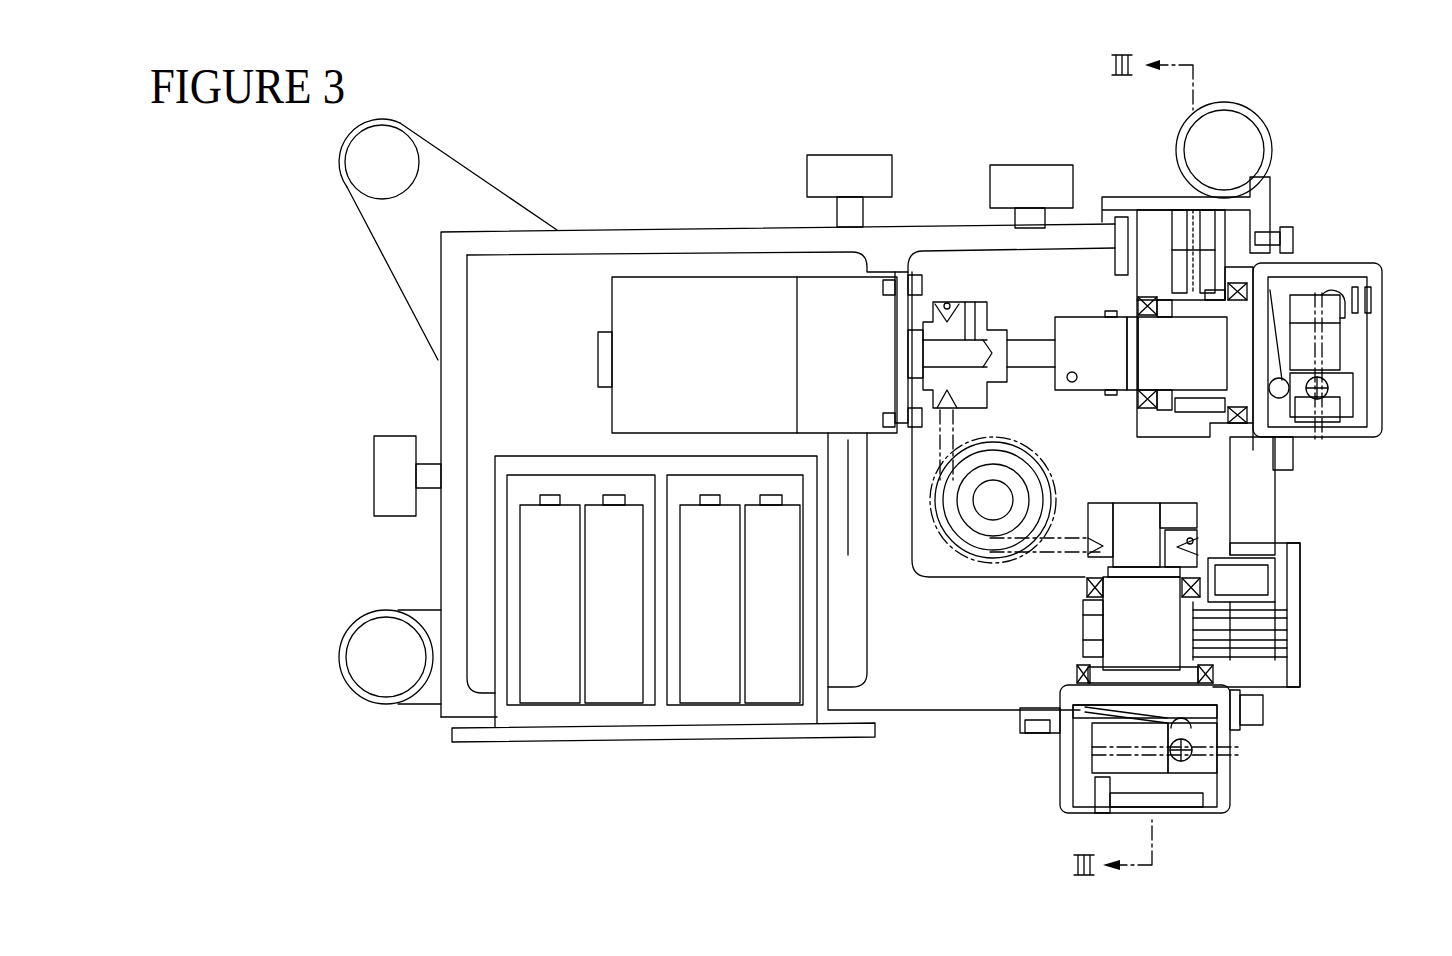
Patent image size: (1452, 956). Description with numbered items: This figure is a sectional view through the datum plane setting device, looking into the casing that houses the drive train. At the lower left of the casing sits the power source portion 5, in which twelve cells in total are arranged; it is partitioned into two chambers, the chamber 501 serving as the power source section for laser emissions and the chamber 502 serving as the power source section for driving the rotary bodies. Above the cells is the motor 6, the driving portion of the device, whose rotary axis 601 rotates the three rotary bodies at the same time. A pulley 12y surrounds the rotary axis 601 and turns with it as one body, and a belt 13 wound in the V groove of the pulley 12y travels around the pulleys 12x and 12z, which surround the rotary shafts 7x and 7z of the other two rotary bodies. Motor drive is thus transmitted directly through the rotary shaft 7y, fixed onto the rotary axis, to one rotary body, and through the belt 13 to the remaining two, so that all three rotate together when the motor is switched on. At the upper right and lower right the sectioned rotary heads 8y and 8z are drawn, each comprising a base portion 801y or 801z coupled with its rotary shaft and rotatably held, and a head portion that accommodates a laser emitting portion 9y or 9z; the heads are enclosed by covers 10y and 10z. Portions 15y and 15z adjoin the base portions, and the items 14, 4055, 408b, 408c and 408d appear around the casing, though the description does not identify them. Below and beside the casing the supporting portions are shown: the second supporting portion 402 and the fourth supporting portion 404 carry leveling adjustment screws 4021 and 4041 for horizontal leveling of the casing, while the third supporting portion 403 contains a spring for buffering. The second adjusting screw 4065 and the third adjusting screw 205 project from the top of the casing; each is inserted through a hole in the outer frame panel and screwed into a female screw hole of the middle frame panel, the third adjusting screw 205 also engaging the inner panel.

The power source portion 5 is at (583, 470).
The motor 6 is at (735, 303).
The belt 13 is at (947, 293).
The mounting bracket 14 is at (1115, 688).
The third adjusting screw 205 is at (1023, 175).
The second supporting portion 402 is at (385, 635).
The third supporting portion 403 is at (395, 168).
The fourth supporting portion 404 is at (1243, 158).
The chamber 501 is at (588, 715).
The chamber 502 is at (748, 715).
The rotary axis 601 is at (967, 360).
The leveling adjustment screw 4021 is at (337, 675).
The leveling adjustment screw 4041 is at (1245, 112).
The switch 4055 is at (393, 473).
The second adjusting screw 4065 is at (843, 167).
The belt 408b is at (437, 690).
The belt 408c is at (407, 250).
The belt bracket 408d is at (1258, 210).
The rotary shaft 7x is at (997, 498).
The rotary shaft 7y is at (1030, 357).
The rotary shaft 7z is at (1120, 500).
The rotary head 8y is at (1252, 358).
The rotary head 8z is at (1088, 708).
The laser emitting portion 9y is at (1328, 352).
The laser emitting portion 9z is at (1143, 765).
The cover 10y is at (1327, 270).
The cover 10z is at (1063, 757).
The pulley 12x is at (960, 548).
The pulley 12y is at (962, 293).
The pulley 12z is at (1202, 505).
The bearing unit 15y is at (1183, 237).
The bearing unit 15z is at (1265, 622).
The base portion 801y is at (1160, 367).
The base portion 801z is at (1095, 605).